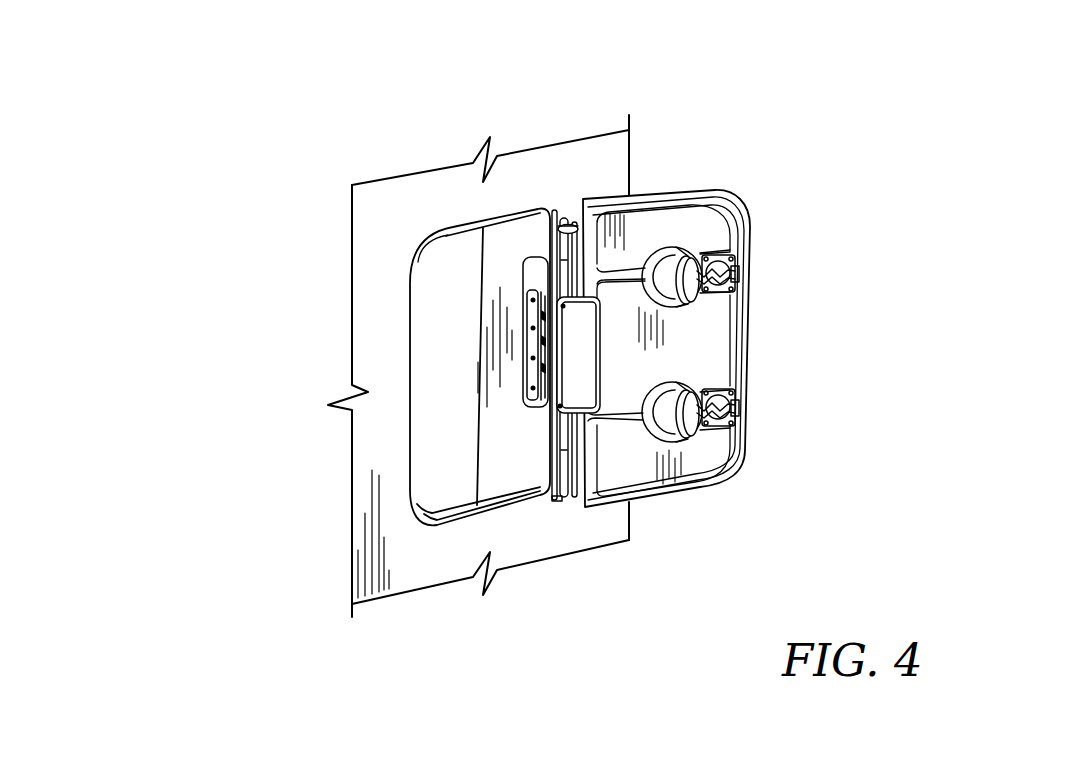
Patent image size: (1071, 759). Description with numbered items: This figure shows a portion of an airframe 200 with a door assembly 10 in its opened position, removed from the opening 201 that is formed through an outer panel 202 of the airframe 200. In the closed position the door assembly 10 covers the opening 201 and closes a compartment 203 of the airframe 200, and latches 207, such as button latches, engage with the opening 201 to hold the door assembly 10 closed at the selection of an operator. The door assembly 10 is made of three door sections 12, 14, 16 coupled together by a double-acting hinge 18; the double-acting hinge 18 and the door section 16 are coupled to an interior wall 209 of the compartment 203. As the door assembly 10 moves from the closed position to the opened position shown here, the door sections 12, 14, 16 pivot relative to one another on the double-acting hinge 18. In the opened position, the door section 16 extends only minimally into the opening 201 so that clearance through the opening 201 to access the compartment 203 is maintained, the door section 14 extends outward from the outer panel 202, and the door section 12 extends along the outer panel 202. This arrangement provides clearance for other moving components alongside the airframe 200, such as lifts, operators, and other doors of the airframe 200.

The door assembly 10 is at (752, 218).
The door section 12 is at (297, 435).
The door section 14 is at (574, 383).
The door section 16 is at (546, 495).
The double-acting hinge 18 is at (528, 386).
The airframe 200 is at (168, 135).
The opening 201 is at (440, 270).
The outer panel 202 is at (615, 157).
The compartment 203 is at (433, 230).
The latches 207 is at (750, 290).
The interior wall 209 is at (523, 234).